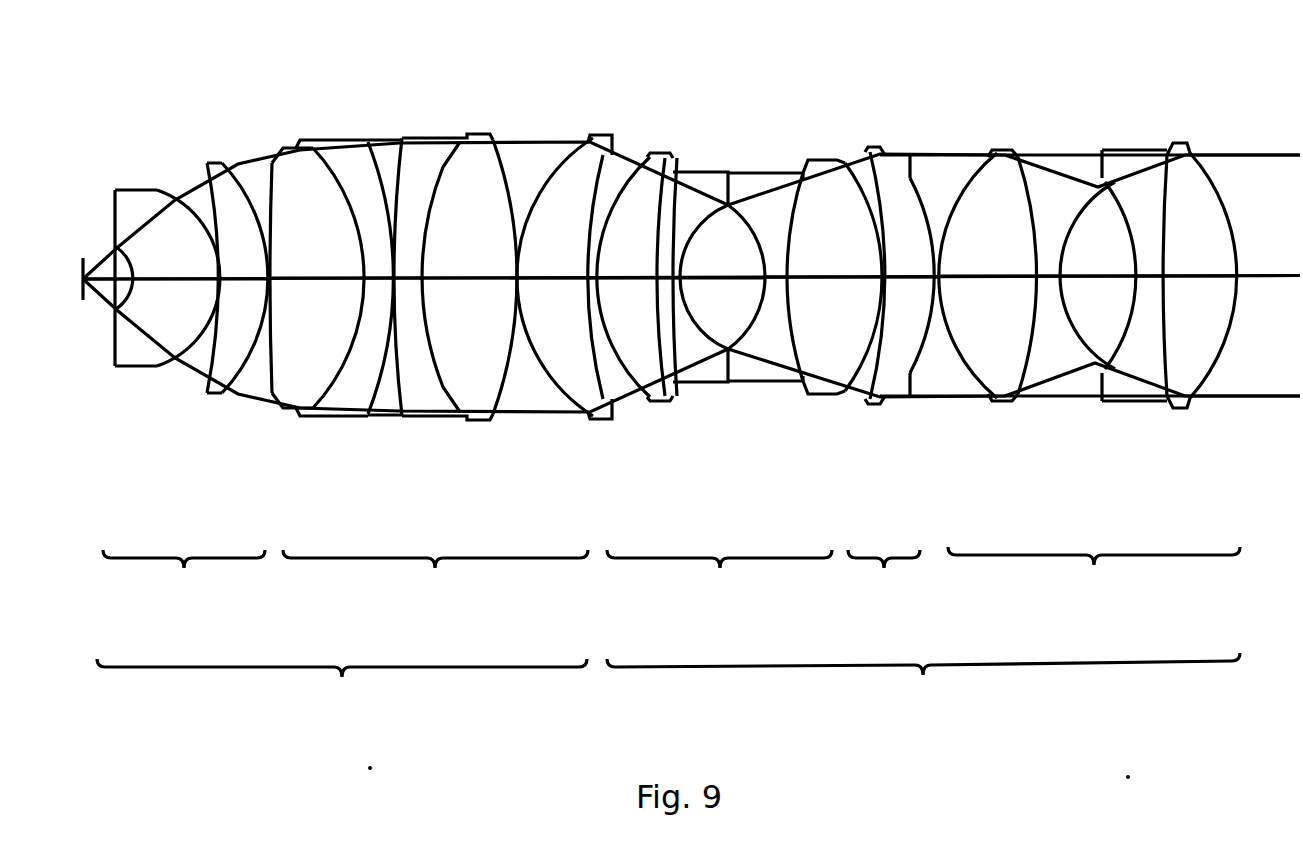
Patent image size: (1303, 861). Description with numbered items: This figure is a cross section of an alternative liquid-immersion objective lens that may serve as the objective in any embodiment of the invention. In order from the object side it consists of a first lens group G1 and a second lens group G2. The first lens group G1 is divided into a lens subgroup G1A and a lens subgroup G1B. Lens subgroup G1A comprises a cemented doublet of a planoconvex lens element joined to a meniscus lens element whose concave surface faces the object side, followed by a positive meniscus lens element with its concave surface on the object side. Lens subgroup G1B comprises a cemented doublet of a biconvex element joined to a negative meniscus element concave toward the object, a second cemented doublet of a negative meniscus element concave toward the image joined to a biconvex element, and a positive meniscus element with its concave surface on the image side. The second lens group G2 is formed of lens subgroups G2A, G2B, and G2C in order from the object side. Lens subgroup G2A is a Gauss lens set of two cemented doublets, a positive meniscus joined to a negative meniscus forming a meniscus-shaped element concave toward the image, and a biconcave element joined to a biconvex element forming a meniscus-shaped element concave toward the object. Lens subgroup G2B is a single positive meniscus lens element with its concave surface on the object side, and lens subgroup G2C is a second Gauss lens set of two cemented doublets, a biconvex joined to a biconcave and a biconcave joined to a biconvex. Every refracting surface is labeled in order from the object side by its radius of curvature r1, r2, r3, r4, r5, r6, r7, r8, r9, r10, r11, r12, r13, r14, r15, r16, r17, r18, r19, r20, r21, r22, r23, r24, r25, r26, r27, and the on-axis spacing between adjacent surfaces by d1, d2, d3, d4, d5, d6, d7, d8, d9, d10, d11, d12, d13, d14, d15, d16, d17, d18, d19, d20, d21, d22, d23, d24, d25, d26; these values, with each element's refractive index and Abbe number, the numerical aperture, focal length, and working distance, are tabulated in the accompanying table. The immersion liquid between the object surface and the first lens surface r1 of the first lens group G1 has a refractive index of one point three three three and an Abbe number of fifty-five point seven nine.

The radius of curvature of first lens surface r1 is at (102, 256).
The radius of curvature of second surface r2 is at (123, 190).
The radius of curvature of third surface r3 is at (185, 197).
The radius of curvature of fourth surface r4 is at (208, 163).
The radius of curvature of fifth surface r5 is at (242, 187).
The radius of curvature of sixth surface r6 is at (273, 180).
The radius of curvature of seventh surface r7 is at (317, 143).
The radius of curvature of eighth surface r8 is at (373, 140).
The radius of curvature of ninth surface r9 is at (408, 138).
The radius of curvature of tenth surface r10 is at (455, 142).
The radius of curvature of eleventh surface r11 is at (496, 140).
The radius of curvature of twelfth surface r12 is at (585, 140).
The radius of curvature of thirteenth surface r13 is at (610, 135).
The radius of curvature of fourteenth surface r14 is at (645, 152).
The radius of curvature of fifteenth surface r15 is at (670, 153).
The radius of curvature of sixteenth surface r16 is at (712, 165).
The radius of curvature of seventeenth surface r17 is at (753, 197).
The radius of curvature of eighteenth surface r18 is at (799, 175).
The radius of curvature of nineteenth surface r19 is at (850, 158).
The radius of curvature of twentieth surface r20 is at (871, 165).
The radius of curvature of twenty-first surface r21 is at (918, 173).
The radius of curvature of twenty-second surface r22 is at (972, 185).
The radius of curvature of twenty-third surface r23 is at (1037, 163).
The radius of curvature of twenty-fourth surface r24 is at (1073, 212).
The radius of curvature of twenty-fifth surface r25 is at (1127, 185).
The radius of curvature of twenty-sixth surface r26 is at (1168, 177).
The radius of curvature of twenty-seventh surface r27 is at (1217, 177).
The on-axis spacing between first and second surfaces d1 is at (113, 305).
The on-axis spacing between second and third surfaces d2 is at (167, 306).
The on-axis spacing between third and fourth surfaces d3 is at (208, 387).
The on-axis spacing between fourth and fifth surfaces d4 is at (242, 306).
The on-axis spacing between fifth and sixth surfaces d5 is at (260, 397).
The on-axis spacing between sixth and seventh surfaces d6 is at (316, 305).
The on-axis spacing between seventh and eighth surfaces d7 is at (340, 413).
The on-axis spacing between eighth and ninth surfaces d8 is at (372, 416).
The on-axis spacing between ninth and tenth surfaces d9 is at (415, 418).
The on-axis spacing between tenth and eleventh surfaces d10 is at (469, 305).
The on-axis spacing between eleventh and twelfth surfaces d11 is at (523, 416).
The on-axis spacing between twelfth and thirteenth surfaces d12 is at (554, 305).
The on-axis spacing between thirteenth and fourteenth surfaces d13 is at (610, 416).
The on-axis spacing between fourteenth and fifteenth surfaces d14 is at (633, 305).
The on-axis spacing between fifteenth and sixteenth surfaces d15 is at (687, 387).
The on-axis spacing between sixteenth and seventeenth surfaces d16 is at (724, 305).
The on-axis spacing between seventeenth and eighteenth surfaces d17 is at (775, 382).
The on-axis spacing between eighteenth and nineteenth surfaces d18 is at (834, 305).
The on-axis spacing between nineteenth and twentieth surfaces d19 is at (847, 393).
The on-axis spacing between twentieth and twenty-first surfaces d20 is at (903, 397).
The on-axis spacing between twenty-first and twenty-second surfaces d21 is at (937, 397).
The on-axis spacing between twenty-second and twenty-third surfaces d22 is at (987, 304).
The on-axis spacing between twenty-third and twenty-fourth surfaces d23 is at (1040, 394).
The on-axis spacing between twenty-fourth and twenty-fifth surfaces d24 is at (1097, 304).
The on-axis spacing between twenty-fifth and twenty-sixth surfaces d25 is at (1128, 398).
The on-axis spacing between twenty-sixth and twenty-seventh surfaces d26 is at (1195, 397).
The lens subgroup G1A is at (184, 587).
The lens subgroup G1B is at (435, 587).
The lens subgroup G2A is at (719, 587).
The lens subgroup G2B is at (883, 587).
The lens subgroup G2C is at (1094, 586).
The first lens group G1 is at (342, 696).
The second lens group G2 is at (923, 693).